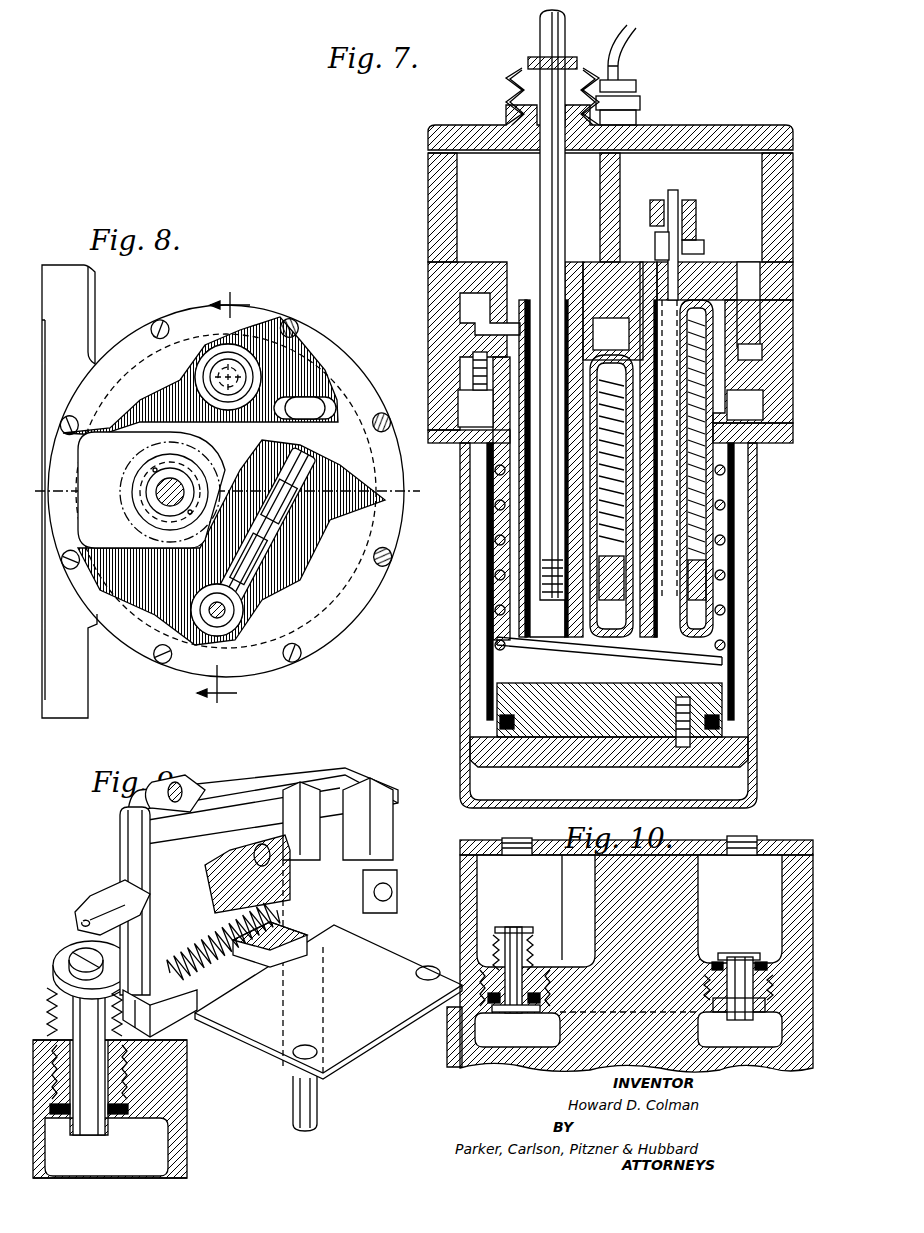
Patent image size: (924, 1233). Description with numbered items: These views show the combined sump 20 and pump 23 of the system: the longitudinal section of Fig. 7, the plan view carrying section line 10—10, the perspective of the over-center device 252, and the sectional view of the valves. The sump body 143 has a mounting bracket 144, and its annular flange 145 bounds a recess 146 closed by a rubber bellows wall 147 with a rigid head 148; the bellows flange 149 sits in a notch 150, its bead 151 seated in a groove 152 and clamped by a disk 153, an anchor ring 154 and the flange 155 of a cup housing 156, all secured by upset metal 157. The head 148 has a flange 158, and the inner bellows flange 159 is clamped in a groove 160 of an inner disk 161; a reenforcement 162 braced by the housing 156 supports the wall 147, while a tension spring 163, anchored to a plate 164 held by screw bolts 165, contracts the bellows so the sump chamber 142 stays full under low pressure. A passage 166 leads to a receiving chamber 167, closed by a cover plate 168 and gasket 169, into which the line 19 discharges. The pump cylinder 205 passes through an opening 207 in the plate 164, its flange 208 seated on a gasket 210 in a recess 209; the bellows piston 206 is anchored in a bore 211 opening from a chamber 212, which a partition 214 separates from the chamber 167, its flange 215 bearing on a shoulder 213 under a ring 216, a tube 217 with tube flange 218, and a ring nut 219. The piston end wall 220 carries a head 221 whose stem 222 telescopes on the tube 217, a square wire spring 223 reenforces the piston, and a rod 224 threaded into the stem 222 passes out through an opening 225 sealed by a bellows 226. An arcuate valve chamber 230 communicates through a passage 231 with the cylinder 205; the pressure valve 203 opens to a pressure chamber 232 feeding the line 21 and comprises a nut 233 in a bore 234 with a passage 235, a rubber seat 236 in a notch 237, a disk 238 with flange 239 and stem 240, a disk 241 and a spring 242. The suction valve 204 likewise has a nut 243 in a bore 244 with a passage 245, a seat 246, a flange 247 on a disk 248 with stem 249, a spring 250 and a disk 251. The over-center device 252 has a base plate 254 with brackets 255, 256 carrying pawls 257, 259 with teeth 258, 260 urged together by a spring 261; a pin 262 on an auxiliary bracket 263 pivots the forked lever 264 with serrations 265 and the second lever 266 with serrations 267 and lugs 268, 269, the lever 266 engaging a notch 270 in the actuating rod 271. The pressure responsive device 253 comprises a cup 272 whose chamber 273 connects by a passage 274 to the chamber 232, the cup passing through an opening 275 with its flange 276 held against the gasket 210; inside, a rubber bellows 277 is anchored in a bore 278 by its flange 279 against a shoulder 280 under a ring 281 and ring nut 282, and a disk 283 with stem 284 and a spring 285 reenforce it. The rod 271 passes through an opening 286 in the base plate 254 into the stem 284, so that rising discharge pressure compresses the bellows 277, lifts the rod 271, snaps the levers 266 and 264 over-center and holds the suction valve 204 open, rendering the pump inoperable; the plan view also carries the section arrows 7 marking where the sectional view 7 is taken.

In FIG. 7, the section line 7- 7 is at (442, 458).
In FIG. 8, the section line 7- 7 is at (416, 480).
In FIG. 8, the section line 10— 10 is at (246, 493).
In FIG. 10, the line 19 is at (504, 838).
In FIG. 7, the sump 20 is at (738, 676).
In FIG. 7, the line 21 is at (620, 70).
In FIG. 10, the line 21 is at (748, 830).
In FIG. 7, the pump 23 is at (478, 180).
In FIG. 8, the pump 23 is at (130, 590).
In FIG. 7, the sump chamber 142 is at (500, 664).
In FIG. 7, the body 143 is at (770, 360).
In FIG. 8, the body 143 is at (340, 358).
In FIG. 9, the body 143 is at (172, 1125).
In FIG. 10, the body 143 is at (462, 1052).
In FIG. 8, the mounting flange or bracket 144 is at (88, 288).
In FIG. 7, the projecting annular flange 145 is at (465, 385).
In FIG. 7, the circular recess 146 is at (458, 402).
In FIG. 7, the bellows wall 147 is at (738, 598).
In FIG. 7, the movable head 148 is at (560, 760).
In FIG. 7, the peripheral flange 149 is at (745, 405).
In FIG. 7, the annular notch 150 is at (765, 455).
In FIG. 7, the rib or bead 151 is at (765, 408).
In FIG. 7, the annular groove 152 is at (770, 422).
In FIG. 7, the annular disk 153 is at (775, 436).
In FIG. 7, the anchor ring 154 is at (770, 448).
In FIG. 7, the outer peripheral flange 155 is at (752, 460).
In FIG. 7, the cylindrical cup or housing 156 is at (757, 510).
In FIG. 7, the riveting or upsetting 157 is at (760, 455).
In FIG. 7, the annular peripheral flange 158 is at (740, 727).
In FIG. 7, the inner peripheral flange 159 is at (728, 735).
In FIG. 7, the annular groove 160 is at (717, 690).
In FIG. 7, the inner disk 161 is at (612, 690).
In FIG. 7, the reenforcement 162 is at (760, 700).
In FIG. 7, the coiled tension spring 163 is at (735, 540).
In FIG. 7, the annular plate 164 is at (735, 375).
In FIG. 7, the screw bolts 165 is at (470, 368).
In FIG. 7, the passage 166 is at (760, 323).
In FIG. 8, the passage 166 is at (343, 450).
In FIG. 7, the receiving chamber 167 is at (770, 182).
In FIG. 8, the receiving chamber 167 is at (170, 622).
In FIG. 10, the receiving chamber 167 is at (478, 895).
In FIG. 7, the cover plate 168 is at (746, 128).
In FIG. 8, the cover plate 168 is at (190, 318).
In FIG. 7, the gasket 169 is at (793, 150).
In FIG. 10, the gasket 169 is at (478, 858).
In FIG. 8, the pressure discharge valve 203 is at (240, 370).
In FIG. 10, the pressure discharge valve 203 is at (733, 952).
In FIG. 8, the suction valve 204 is at (210, 625).
In FIG. 9, the suction valve 204 is at (48, 1142).
In FIG. 10, the suction valve 204 is at (492, 1020).
In FIG. 7, the cylinder 205 is at (530, 612).
In FIG. 7, the bellows piston 206 is at (510, 525).
In FIG. 7, the circular opening 207 is at (474, 415).
In FIG. 7, the outer peripheral flange 208 is at (475, 389).
In FIG. 7, the shallow circular recess 209 is at (470, 352).
In FIG. 7, the gasket 210 is at (611, 342).
In FIG. 7, the bore 211 is at (472, 302).
In FIG. 7, the chamber 212 is at (428, 174).
In FIG. 8, the chamber 212 is at (120, 560).
In FIG. 7, the annular shoulder 213 is at (474, 316).
In FIG. 7, the partition 214 is at (612, 174).
In FIG. 8, the partition 214 is at (150, 600).
In FIG. 10, the partition 214 is at (600, 884).
In FIG. 7, the outer peripheral flange 215 is at (518, 272).
In FIG. 7, the annular ring 216 is at (596, 272).
In FIG. 7, the tube 217 is at (573, 272).
In FIG. 7, the peripheral mounting flange 218 is at (528, 272).
In FIG. 7, the ring nut 219 is at (462, 290).
In FIG. 7, the wall 220 is at (555, 637).
In FIG. 7, the circular head 221 is at (530, 614).
In FIG. 7, the axial stem 222 is at (611, 578).
In FIG. 7, the square wire coil spring 223 is at (590, 548).
In FIG. 7, the rod 224 is at (566, 29).
In FIG. 8, the rod 224 is at (156, 492).
In FIG. 7, the opening 225 is at (508, 118).
In FIG. 7, the bellows 226 is at (512, 72).
In FIG. 7, the arcuate valve chamber 230 is at (462, 292).
In FIG. 8, the arcuate valve chamber 230 is at (215, 425).
In FIG. 9, the arcuate valve chamber 230 is at (160, 1142).
In FIG. 10, the arcuate valve chamber 230 is at (522, 1047).
In FIG. 7, the passage 231 is at (480, 330).
In FIG. 8, the passage 231 is at (132, 505).
In FIG. 8, the pressure chamber 232 is at (305, 358).
In FIG. 10, the pressure chamber 232 is at (778, 858).
In FIG. 10, the nut 233 is at (763, 958).
In FIG. 10, the bore 234 is at (713, 1005).
In FIG. 10, the central valve passage 235 is at (706, 988).
In FIG. 10, the rubber ring or insert 236 is at (710, 968).
In FIG. 10, the annular notch 237 is at (716, 958).
In FIG. 10, the disk 238 is at (742, 950).
In FIG. 10, the annular flange 239 is at (715, 950).
In FIG. 10, the axial stem 240 is at (728, 1013).
In FIG. 10, the disk 241 is at (750, 1013).
In FIG. 10, the coil compression spring 242 is at (700, 1012).
In FIG. 9, the nut 243 is at (130, 1078).
In FIG. 10, the nut 243 is at (552, 975).
In FIG. 9, the bore 244 is at (130, 1062).
In FIG. 10, the bore 244 is at (552, 990).
In FIG. 9, the central valve passage 245 is at (130, 1092).
In FIG. 10, the central valve passage 245 is at (478, 955).
In FIG. 9, the resilient valve seat 246 is at (132, 1108).
In FIG. 10, the resilient valve seat 246 is at (542, 1000).
In FIG. 9, the annular flange 247 is at (96, 1138).
In FIG. 10, the annular flange 247 is at (492, 1010).
In FIG. 9, the disk 248 is at (108, 1150).
In FIG. 10, the disk 248 is at (537, 1012).
In FIG. 9, the stem 249 is at (62, 965).
In FIG. 10, the stem 249 is at (523, 950).
In FIG. 10, the coiled compression spring 250 is at (533, 930).
In FIG. 9, the disk 251 is at (80, 948).
In FIG. 10, the disk 251 is at (522, 927).
In FIG. 8, the over-center device 252 is at (330, 530).
In FIG. 9, the over-center device 252 is at (290, 792).
In FIG. 7, the pressure responsive device 253 is at (652, 620).
In FIG. 7, the base plate 254 is at (712, 248).
In FIG. 8, the base plate 254 is at (328, 572).
In FIG. 9, the base plate 254 is at (410, 945).
In FIG. 9, the bracket 255 is at (392, 872).
In FIG. 9, the bracket 256 is at (197, 1020).
In FIG. 7, the upstanding pawl 257 is at (486, 500).
In FIG. 8, the upstanding pawl 257 is at (355, 500).
In FIG. 9, the upstanding pawl 257 is at (385, 818).
In FIG. 9, the tooth 258 is at (380, 800).
In FIG. 8, the depending pawl 259 is at (225, 600).
In FIG. 9, the depending pawl 259 is at (125, 850).
In FIG. 9, the tooth 260 is at (140, 882).
In FIG. 9, the coil tension spring 261 is at (228, 958).
In FIG. 9, the pin 262 is at (265, 845).
In FIG. 9, the auxiliary bracket 263 is at (300, 960).
In FIG. 7, the forked operating lever 264 is at (692, 205).
In FIG. 8, the forked operating lever 264 is at (255, 580).
In FIG. 9, the forked operating lever 264 is at (330, 785).
In FIG. 9, the pawl serrations 265 is at (372, 842).
In FIG. 8, the second operating lever 266 is at (300, 590).
In FIG. 9, the second operating lever 266 is at (225, 845).
In FIG. 9, the pawl serrations 267 is at (240, 868).
In FIG. 8, the lug 268 is at (235, 590).
In FIG. 9, the lug 268 is at (185, 845).
In FIG. 9, the lug 269 is at (205, 968).
In FIG. 7, the transverse notch 270 is at (678, 195).
In FIG. 9, the transverse notch 270 is at (312, 778).
In FIG. 7, the actuating rod 271 is at (660, 243).
In FIG. 8, the actuating rod 271 is at (340, 470).
In FIG. 9, the actuating rod 271 is at (317, 1105).
In FIG. 7, the closed cup 272 is at (714, 548).
In FIG. 7, the internal pressure chamber 273 is at (690, 640).
In FIG. 7, the passage 274 is at (745, 255).
In FIG. 8, the passage 274 is at (322, 408).
In FIG. 7, the opening 275 is at (740, 390).
In FIG. 7, the flange 276 is at (752, 352).
In FIG. 7, the rubber bellows 277 is at (714, 600).
In FIG. 7, the bore 278 is at (745, 345).
In FIG. 7, the peripheral flange 279 is at (740, 300).
In FIG. 7, the shoulder 280 is at (735, 315).
In FIG. 7, the ring 281 is at (750, 282).
In FIG. 7, the ring nut 282 is at (760, 268).
In FIG. 7, the disk 283 is at (706, 600).
In FIG. 7, the central stem 284 is at (690, 628).
In FIG. 7, the coiled compression spring 285 is at (706, 510).
In FIG. 7, the opening 286 is at (664, 250).
In FIG. 9, the opening 286 is at (305, 940).